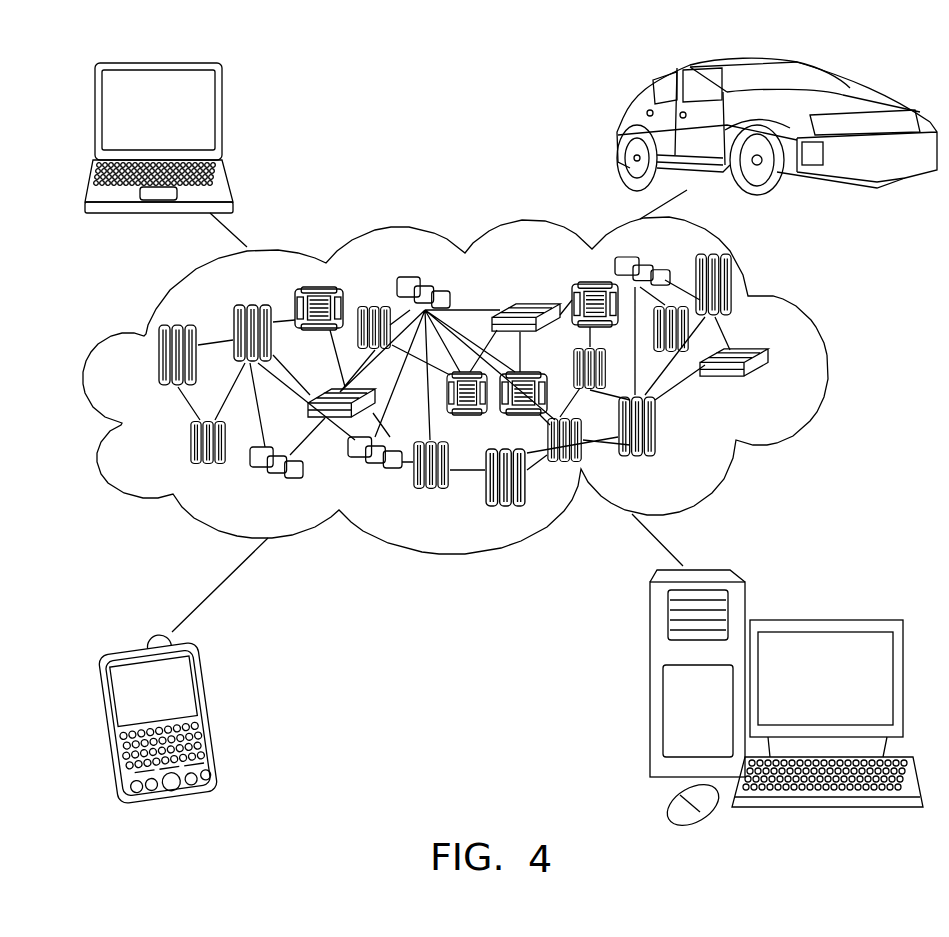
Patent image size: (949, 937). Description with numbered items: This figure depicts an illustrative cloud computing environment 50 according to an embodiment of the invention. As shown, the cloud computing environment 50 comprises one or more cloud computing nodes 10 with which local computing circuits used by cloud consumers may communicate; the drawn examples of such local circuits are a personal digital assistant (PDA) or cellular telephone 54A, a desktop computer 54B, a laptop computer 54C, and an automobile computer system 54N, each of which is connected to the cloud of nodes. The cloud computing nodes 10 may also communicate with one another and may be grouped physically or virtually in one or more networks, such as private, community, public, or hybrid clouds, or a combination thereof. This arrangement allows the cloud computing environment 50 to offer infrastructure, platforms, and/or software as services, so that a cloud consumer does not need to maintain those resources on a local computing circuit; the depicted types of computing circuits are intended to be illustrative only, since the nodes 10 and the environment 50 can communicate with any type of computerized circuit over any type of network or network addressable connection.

The cloud computing nodes 10 is at (778, 390).
The cloud computing environment 50 is at (480, 385).
The personal digital assistant (PDA) or cellular telephone 54A is at (213, 710).
The desktop computer 54B is at (822, 618).
The laptop computer 54C is at (222, 117).
The automobile computer system 54N is at (627, 130).